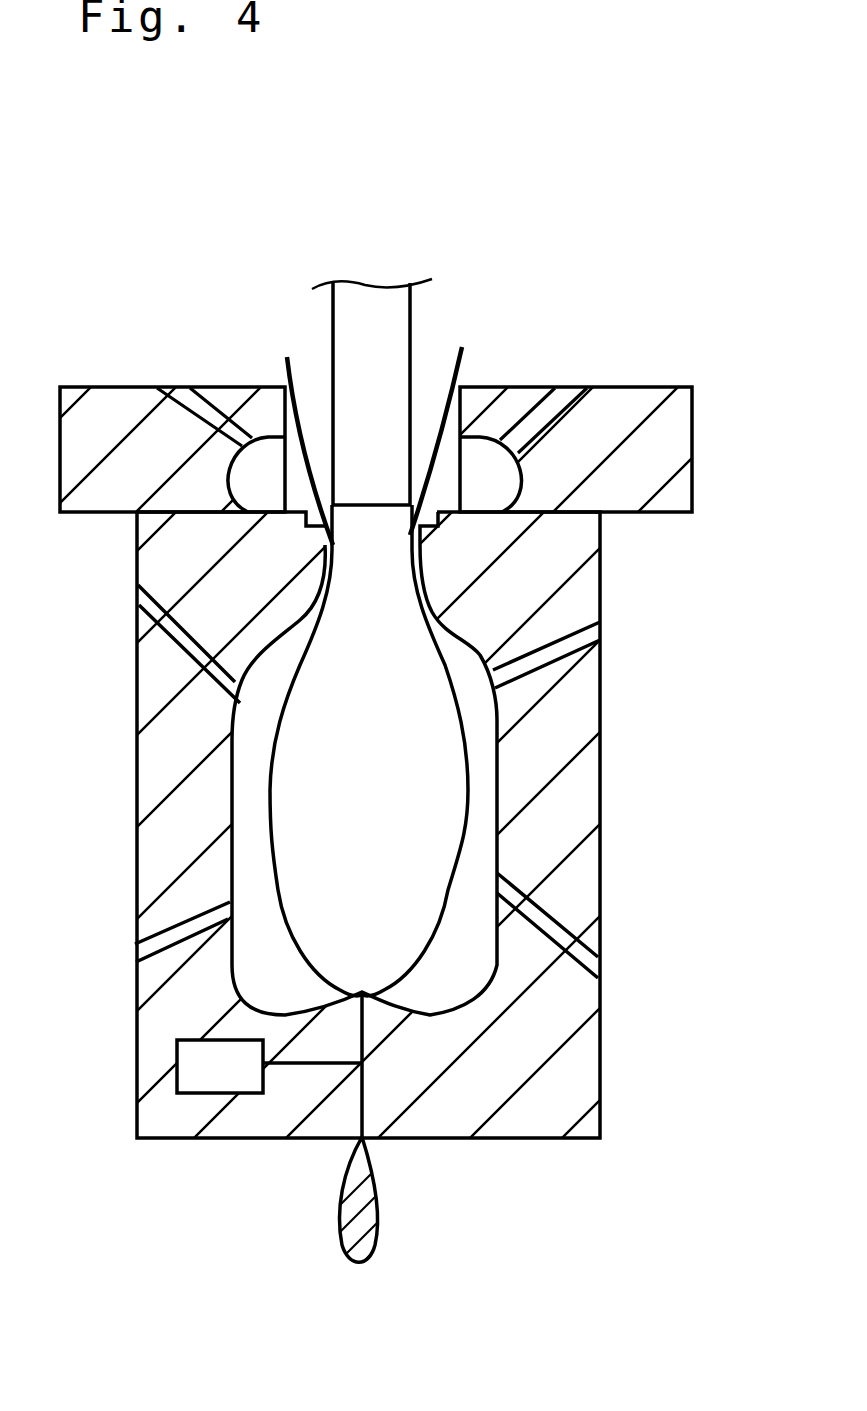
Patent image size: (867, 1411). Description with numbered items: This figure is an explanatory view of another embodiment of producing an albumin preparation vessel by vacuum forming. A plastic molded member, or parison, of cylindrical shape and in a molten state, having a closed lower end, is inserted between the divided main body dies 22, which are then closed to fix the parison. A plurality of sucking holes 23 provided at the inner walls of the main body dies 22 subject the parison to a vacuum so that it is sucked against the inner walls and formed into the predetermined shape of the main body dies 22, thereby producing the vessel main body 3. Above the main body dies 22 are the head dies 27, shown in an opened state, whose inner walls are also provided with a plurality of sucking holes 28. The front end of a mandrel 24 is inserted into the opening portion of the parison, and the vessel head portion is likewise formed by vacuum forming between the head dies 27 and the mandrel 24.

The vessel main body 3 is at (448, 870).
The main body dies 22 is at (172, 828).
The sucking holes 23 is at (138, 625).
The mandrel 24 is at (395, 322).
The head dies 27 is at (98, 493).
The sucking holes 28 is at (188, 398).